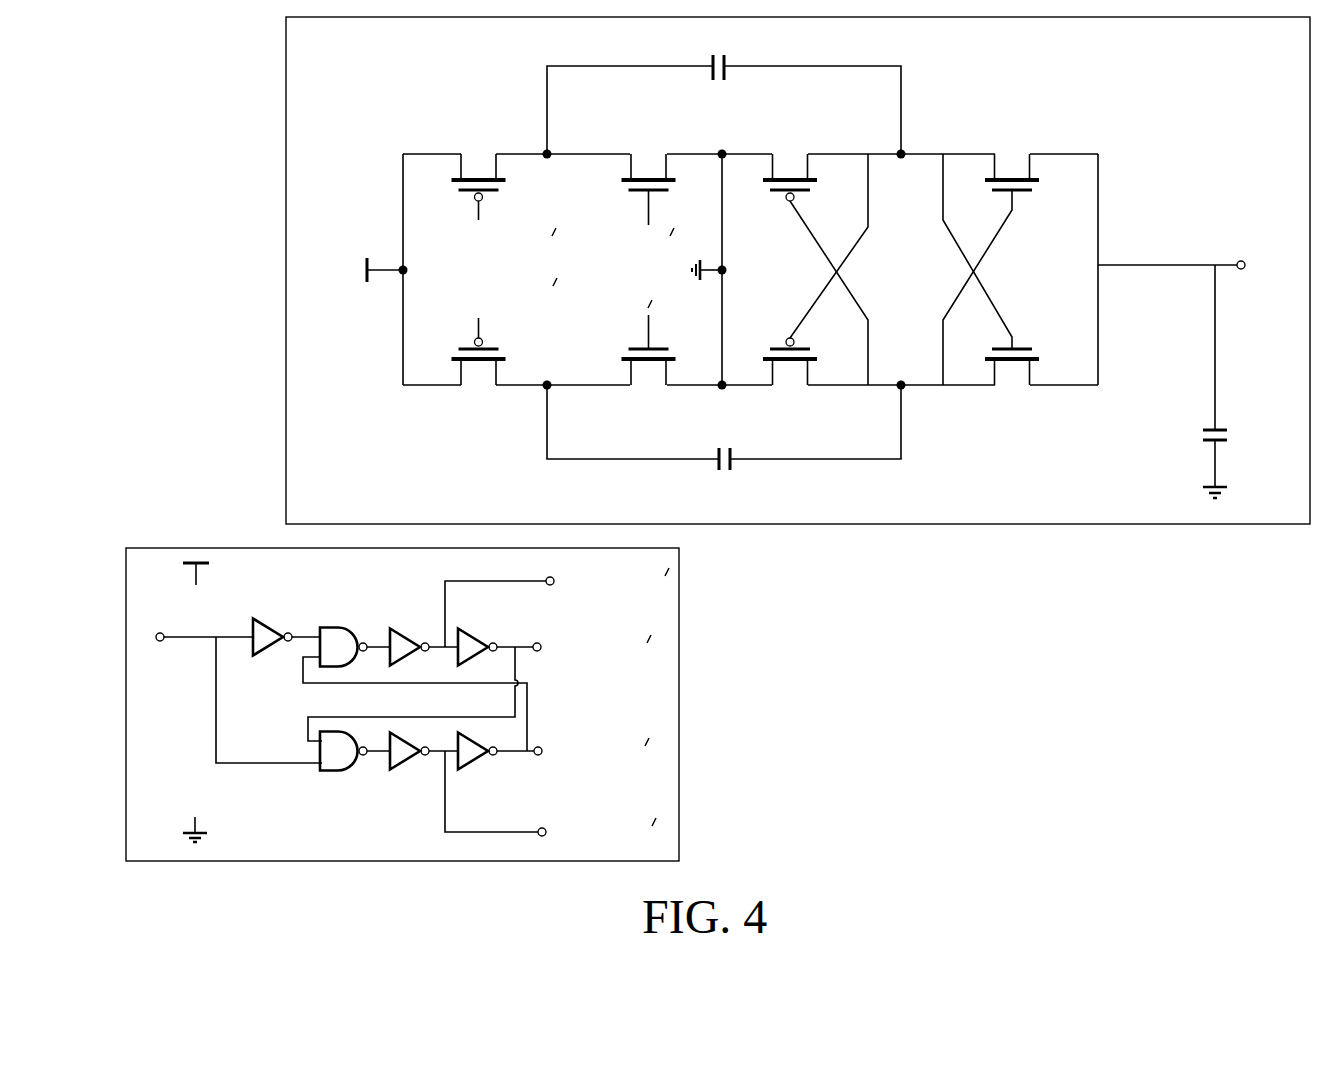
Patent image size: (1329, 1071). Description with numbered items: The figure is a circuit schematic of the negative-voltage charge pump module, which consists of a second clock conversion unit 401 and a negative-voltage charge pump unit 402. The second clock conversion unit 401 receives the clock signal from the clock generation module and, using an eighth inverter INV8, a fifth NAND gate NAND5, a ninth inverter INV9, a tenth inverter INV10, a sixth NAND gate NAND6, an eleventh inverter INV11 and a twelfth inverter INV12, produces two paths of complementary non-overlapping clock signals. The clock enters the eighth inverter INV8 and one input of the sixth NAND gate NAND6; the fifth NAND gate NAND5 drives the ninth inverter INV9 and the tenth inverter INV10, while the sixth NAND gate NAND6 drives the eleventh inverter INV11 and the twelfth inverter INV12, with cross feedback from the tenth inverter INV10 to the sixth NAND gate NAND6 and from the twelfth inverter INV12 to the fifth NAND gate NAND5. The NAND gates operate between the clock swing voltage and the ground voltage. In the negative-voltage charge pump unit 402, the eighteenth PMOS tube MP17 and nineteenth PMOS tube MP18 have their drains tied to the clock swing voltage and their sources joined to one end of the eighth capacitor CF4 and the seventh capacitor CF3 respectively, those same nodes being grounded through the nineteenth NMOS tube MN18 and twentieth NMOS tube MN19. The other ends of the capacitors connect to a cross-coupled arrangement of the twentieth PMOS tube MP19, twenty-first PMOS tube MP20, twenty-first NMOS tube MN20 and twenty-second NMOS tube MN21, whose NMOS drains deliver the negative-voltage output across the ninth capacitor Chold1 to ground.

The second clock conversion unit 401 is at (437, 704).
The negative-voltage charge pump unit 402 is at (763, 270).
The eighteenth PMOS tube MP17 is at (479, 175).
The nineteenth PMOS tube MP18 is at (479, 366).
The twentieth PMOS tube MP19 is at (815, 285).
The twenty-first PMOS tube MP20 is at (815, 254).
The nineteenth NMOS tube MN18 is at (649, 176).
The twentieth NMOS tube MN19 is at (647, 364).
The twenty-first NMOS tube MN20 is at (991, 279).
The twenty-second NMOS tube MN21 is at (991, 255).
The seventh capacitor CF3 is at (724, 442).
The eighth capacitor CF4 is at (724, 95).
The ninth capacitor Chold1 is at (1240, 381).
The eighth inverter INV8 is at (261, 627).
The ninth inverter INV9 is at (407, 632).
The tenth inverter INV10 is at (477, 637).
The eleventh inverter INV11 is at (401, 762).
The twelfth inverter INV12 is at (484, 763).
The fifth NAND gate NAND5 is at (333, 633).
The sixth NAND gate NAND6 is at (332, 761).